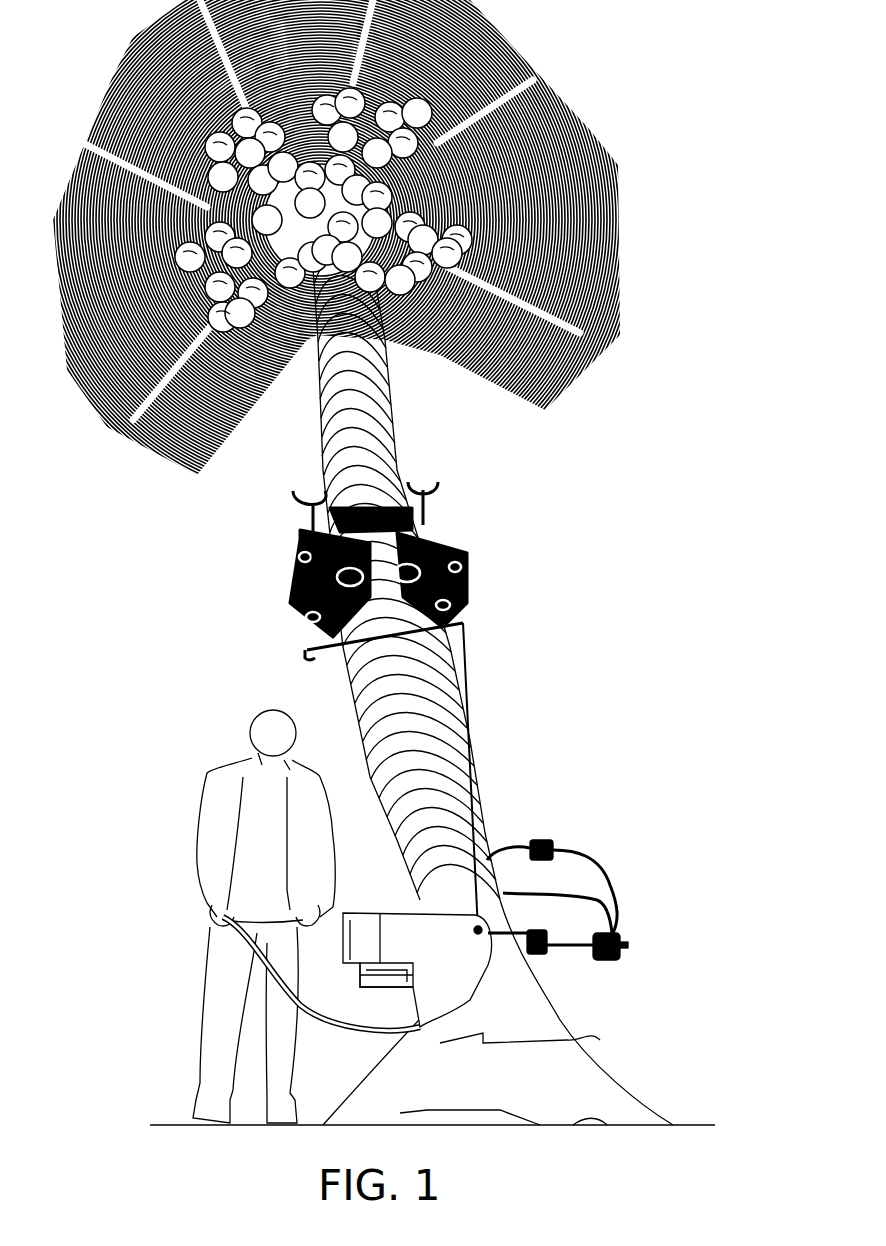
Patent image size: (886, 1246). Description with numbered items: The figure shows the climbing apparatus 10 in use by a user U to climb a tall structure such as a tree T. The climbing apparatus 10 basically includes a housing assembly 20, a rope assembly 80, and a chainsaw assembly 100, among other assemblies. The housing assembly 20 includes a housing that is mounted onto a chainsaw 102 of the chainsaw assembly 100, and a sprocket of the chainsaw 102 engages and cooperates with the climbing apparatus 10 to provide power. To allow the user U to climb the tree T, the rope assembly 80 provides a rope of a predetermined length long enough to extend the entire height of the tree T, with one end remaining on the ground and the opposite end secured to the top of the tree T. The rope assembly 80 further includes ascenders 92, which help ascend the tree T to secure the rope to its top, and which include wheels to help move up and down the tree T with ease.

The tree T is at (360, 437).
The climbing apparatus 10 is at (411, 571).
The ascenders 92 is at (453, 550).
The rope assembly 80 is at (470, 716).
The user U is at (200, 810).
The housing assembly 20 is at (495, 960).
The chainsaw assembly 100 is at (368, 980).
The chainsaw 102 is at (427, 1030).